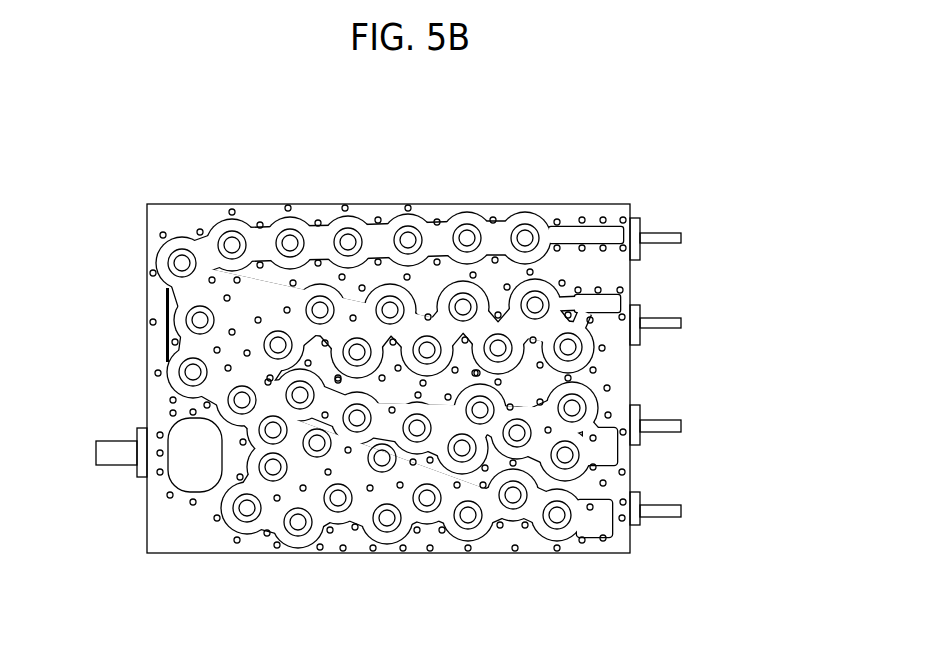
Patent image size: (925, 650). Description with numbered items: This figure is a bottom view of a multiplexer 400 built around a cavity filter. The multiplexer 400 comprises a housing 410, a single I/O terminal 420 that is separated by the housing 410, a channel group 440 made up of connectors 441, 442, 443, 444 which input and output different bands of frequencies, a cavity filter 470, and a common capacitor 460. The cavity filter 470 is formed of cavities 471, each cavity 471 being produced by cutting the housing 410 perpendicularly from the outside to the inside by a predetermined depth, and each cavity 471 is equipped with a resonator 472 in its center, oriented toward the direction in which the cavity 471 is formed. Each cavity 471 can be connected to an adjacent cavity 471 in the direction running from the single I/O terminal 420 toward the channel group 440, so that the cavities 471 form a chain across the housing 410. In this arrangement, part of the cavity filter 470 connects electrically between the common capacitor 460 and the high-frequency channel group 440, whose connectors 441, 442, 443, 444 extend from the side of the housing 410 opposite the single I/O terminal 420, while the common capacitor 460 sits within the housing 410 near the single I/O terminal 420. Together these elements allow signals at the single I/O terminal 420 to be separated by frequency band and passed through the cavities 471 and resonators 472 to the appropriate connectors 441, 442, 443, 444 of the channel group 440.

The multiplexer 400 is at (146, 181).
The housing 410 is at (620, 537).
The single I/O terminal 420 is at (108, 450).
The channel group 440 is at (745, 371).
The connector 441 is at (681, 241).
The connector 442 is at (681, 324).
The connector 443 is at (682, 424).
The connector 444 is at (700, 483).
The common capacitor 460 is at (190, 478).
The cavity filter 470 is at (488, 160).
The cavity 471 is at (466, 240).
The resonator 472 is at (524, 238).